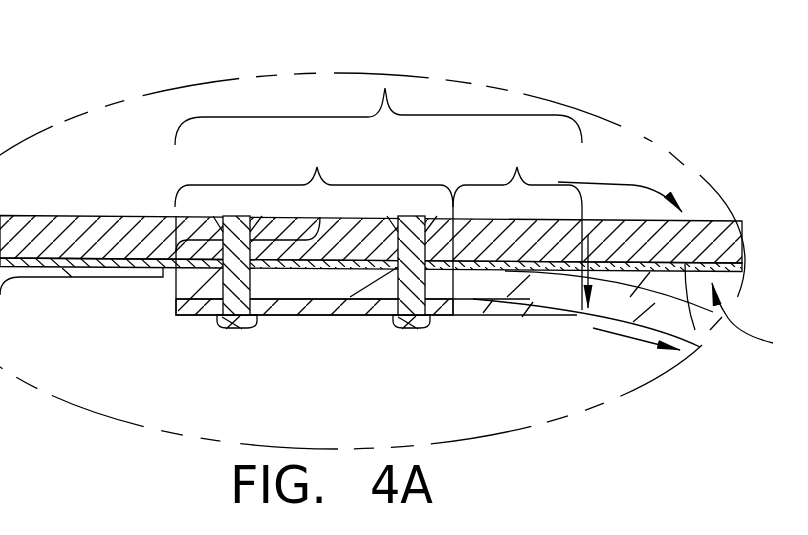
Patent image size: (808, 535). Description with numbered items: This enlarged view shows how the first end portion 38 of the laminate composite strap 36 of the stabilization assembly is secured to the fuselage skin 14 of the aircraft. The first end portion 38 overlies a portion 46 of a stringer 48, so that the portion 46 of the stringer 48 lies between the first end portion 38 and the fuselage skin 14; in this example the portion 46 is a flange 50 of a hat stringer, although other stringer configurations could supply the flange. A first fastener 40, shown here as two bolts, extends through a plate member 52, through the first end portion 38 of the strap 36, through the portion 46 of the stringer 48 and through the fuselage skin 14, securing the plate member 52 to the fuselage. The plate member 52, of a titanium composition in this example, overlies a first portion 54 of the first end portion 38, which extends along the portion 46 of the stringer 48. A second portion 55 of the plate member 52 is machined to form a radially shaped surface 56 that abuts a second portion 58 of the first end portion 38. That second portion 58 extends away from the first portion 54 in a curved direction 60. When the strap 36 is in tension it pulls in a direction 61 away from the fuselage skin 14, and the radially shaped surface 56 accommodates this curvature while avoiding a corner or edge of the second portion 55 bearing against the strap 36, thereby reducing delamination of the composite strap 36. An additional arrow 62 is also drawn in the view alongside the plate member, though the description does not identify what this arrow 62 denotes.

The fuselage skin 14 is at (712, 230).
The strap 36 is at (741, 254).
The first end portion 38 is at (385, 88).
The first fastener 40 is at (233, 327).
The portion of stringer 46 is at (322, 218).
The stringer 48 is at (760, 322).
The flange 50 is at (695, 330).
The plate member 52 is at (322, 312).
The first portion 54 is at (317, 167).
The second portion 55 is at (497, 310).
The radially shaped surface 56 is at (523, 300).
The second portion 58 is at (517, 167).
The curved direction 60 is at (633, 185).
The direction 61 is at (593, 249).
The flow arrow along flange 62 is at (625, 335).